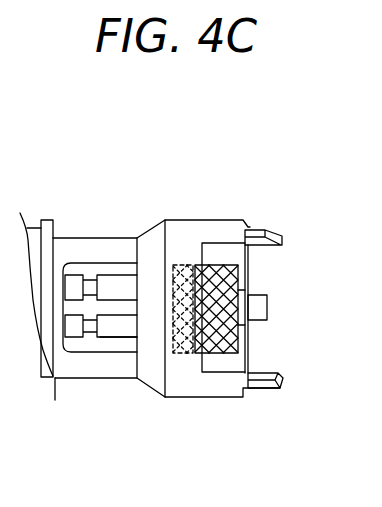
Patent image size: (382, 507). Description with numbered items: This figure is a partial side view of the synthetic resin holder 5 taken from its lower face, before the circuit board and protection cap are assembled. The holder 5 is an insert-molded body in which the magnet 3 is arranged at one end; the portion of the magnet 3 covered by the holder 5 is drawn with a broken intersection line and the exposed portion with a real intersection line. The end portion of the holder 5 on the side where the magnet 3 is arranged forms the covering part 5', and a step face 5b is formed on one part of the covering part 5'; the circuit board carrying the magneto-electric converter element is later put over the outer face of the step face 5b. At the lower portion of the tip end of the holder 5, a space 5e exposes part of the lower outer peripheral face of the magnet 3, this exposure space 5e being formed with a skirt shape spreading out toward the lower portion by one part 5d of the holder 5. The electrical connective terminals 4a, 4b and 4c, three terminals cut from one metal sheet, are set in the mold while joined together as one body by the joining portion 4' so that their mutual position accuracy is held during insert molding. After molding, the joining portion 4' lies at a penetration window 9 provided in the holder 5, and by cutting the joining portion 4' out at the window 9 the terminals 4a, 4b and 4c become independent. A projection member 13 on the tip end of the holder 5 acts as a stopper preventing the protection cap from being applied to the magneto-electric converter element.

The magnet 3 is at (227, 282).
The electrical connective terminal 4a is at (117, 274).
The electrical connective terminal 4b is at (121, 313).
The electrical connective terminal 4c is at (117, 345).
The joining portion 4' is at (51, 343).
The synthetic resin holder 5 is at (166, 340).
The step face 5b is at (250, 285).
The one part of the synthetic resin holder 5d is at (224, 255).
The space 5e is at (250, 228).
The covering part 5' is at (292, 377).
The penetration window 9 is at (93, 265).
The projection member 13 is at (267, 315).